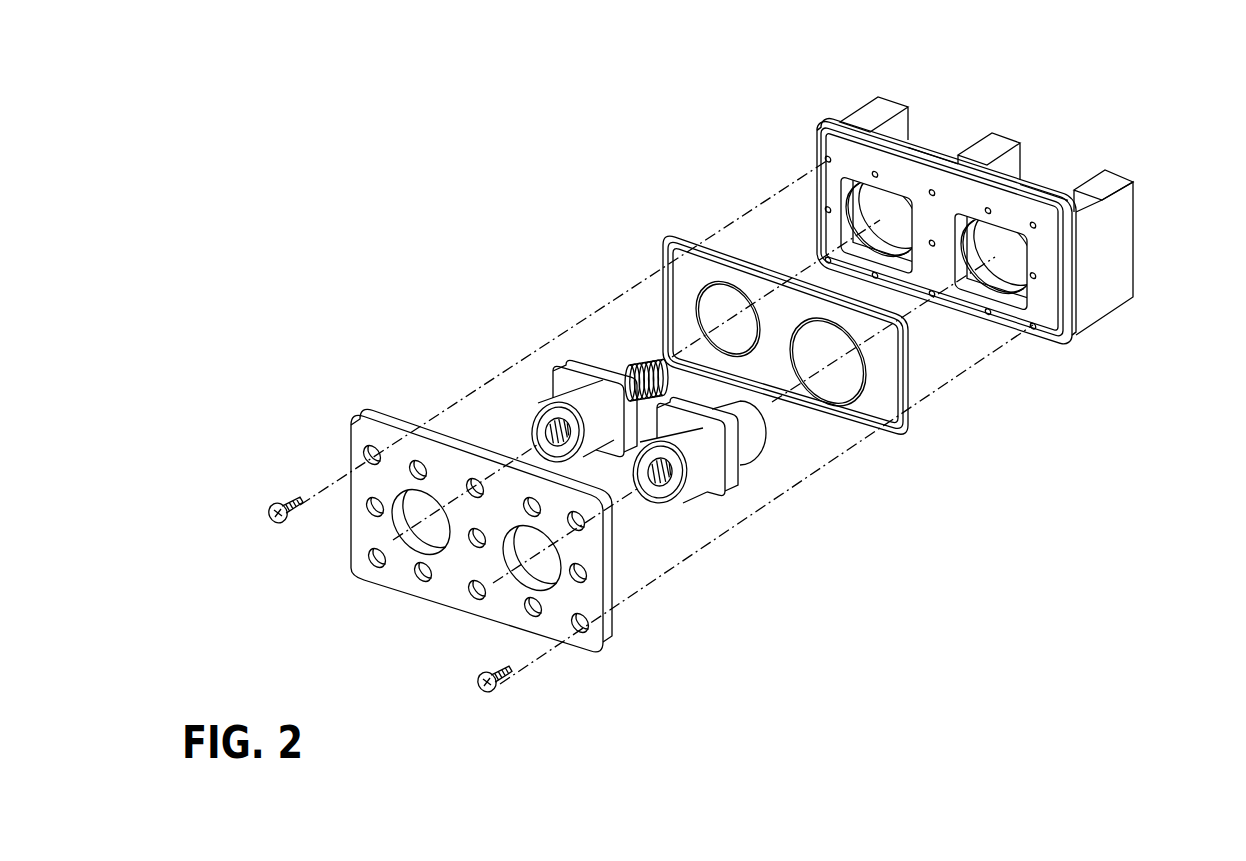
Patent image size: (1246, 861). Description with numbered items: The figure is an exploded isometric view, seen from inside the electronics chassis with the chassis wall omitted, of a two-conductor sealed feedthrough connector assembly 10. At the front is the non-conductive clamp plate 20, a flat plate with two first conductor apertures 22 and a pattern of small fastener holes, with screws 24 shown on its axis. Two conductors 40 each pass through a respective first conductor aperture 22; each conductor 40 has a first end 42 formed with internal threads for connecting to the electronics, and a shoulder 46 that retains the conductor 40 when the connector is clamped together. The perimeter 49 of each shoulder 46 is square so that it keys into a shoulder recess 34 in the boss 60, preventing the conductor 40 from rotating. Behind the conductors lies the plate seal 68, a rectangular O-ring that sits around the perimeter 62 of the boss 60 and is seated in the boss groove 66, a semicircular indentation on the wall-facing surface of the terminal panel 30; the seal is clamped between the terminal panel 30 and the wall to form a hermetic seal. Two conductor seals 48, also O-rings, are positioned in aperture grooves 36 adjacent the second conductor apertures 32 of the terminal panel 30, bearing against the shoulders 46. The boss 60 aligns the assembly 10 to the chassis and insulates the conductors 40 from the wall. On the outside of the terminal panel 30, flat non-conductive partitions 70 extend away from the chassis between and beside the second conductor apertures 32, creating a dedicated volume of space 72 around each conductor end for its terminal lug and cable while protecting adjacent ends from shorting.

The connector assembly 10 is at (380, 190).
The non-conductive clamp plate 20 is at (598, 655).
The first conductor aperture 22 is at (418, 516).
The screws 24 is at (272, 506).
The terminal panel 30 is at (930, 211).
The second conductor aperture 32 is at (628, 362).
The shoulder recess 34 is at (957, 222).
The aperture groove 36 is at (855, 198).
The conductor 40 is at (538, 417).
The first end 42 is at (795, 429).
The shoulder 46 is at (554, 366).
The conductor seal 48 is at (702, 292).
The perimeter of the shoulder 49 is at (561, 350).
The boss 60 is at (892, 212).
The perimeter of the boss 62 is at (830, 138).
The boss groove 66 is at (827, 124).
The plate seal 68 is at (668, 233).
The partition 70 is at (868, 100).
The volume of space 72 is at (921, 118).